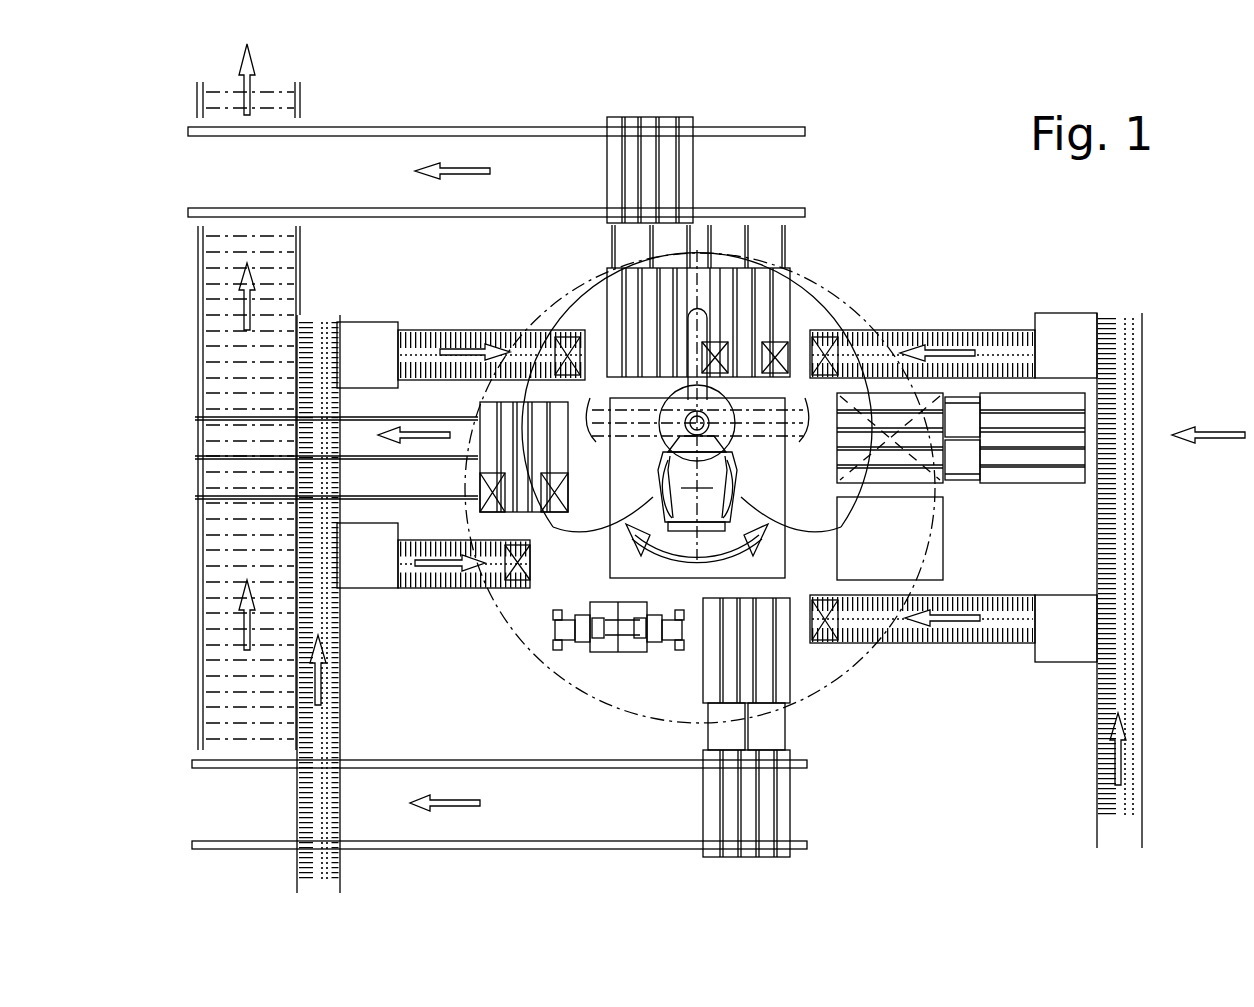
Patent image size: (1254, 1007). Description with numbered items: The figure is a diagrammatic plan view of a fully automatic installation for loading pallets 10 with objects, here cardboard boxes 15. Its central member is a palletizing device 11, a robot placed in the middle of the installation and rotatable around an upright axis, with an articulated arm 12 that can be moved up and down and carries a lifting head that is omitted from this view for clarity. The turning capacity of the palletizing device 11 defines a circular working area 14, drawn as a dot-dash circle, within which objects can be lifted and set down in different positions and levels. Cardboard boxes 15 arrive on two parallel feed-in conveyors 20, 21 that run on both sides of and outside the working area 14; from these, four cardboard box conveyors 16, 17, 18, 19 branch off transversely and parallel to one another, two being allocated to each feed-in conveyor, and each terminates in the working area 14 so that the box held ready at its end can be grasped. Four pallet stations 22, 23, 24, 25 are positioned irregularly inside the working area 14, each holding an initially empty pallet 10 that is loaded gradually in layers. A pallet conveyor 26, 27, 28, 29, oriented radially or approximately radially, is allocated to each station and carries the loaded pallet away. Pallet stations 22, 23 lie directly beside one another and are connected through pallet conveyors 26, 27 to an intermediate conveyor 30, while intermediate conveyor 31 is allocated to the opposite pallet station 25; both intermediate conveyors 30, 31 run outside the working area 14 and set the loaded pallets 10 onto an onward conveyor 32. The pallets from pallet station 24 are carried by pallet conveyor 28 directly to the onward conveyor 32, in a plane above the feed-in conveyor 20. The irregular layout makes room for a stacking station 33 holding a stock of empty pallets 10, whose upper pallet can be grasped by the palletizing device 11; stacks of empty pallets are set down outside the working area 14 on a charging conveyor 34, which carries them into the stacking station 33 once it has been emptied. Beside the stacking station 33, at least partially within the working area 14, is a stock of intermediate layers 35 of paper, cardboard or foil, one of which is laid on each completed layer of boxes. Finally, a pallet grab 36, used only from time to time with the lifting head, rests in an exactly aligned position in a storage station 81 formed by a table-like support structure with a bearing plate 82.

The pallet 10 is at (668, 140).
The palletizing device 11 is at (618, 537).
The articulated arm 12 is at (802, 305).
The working area 14 is at (862, 302).
The cardboard box 15 is at (757, 340).
The cardboard box conveyor 16 is at (424, 326).
The cardboard box conveyor 17 is at (420, 592).
The cardboard box conveyor 18 is at (1010, 328).
The cardboard box conveyor 19 is at (1010, 645).
The feed-in conveyor 20 is at (288, 798).
The feed-in conveyor 21 is at (1156, 603).
The pallet station 22 is at (598, 262).
The pallet station 23 is at (712, 330).
The pallet station 24 is at (513, 398).
The pallet station 25 is at (690, 675).
The pallet conveyor 26 is at (692, 230).
The pallet conveyor 27 is at (762, 230).
The pallet conveyor 28 is at (369, 408).
The pallet conveyor 29 is at (800, 730).
The intermediate conveyor 30 is at (440, 122).
The intermediate conveyor 31 is at (503, 855).
The onward conveyor 32 is at (194, 573).
The stacking station 33 is at (948, 493).
The charging conveyor 34 is at (968, 492).
The stock of intermediate layers 35 is at (932, 560).
The pallet grab 36 is at (565, 645).
The storage station 81 is at (586, 655).
The bearing plate 82 is at (620, 656).